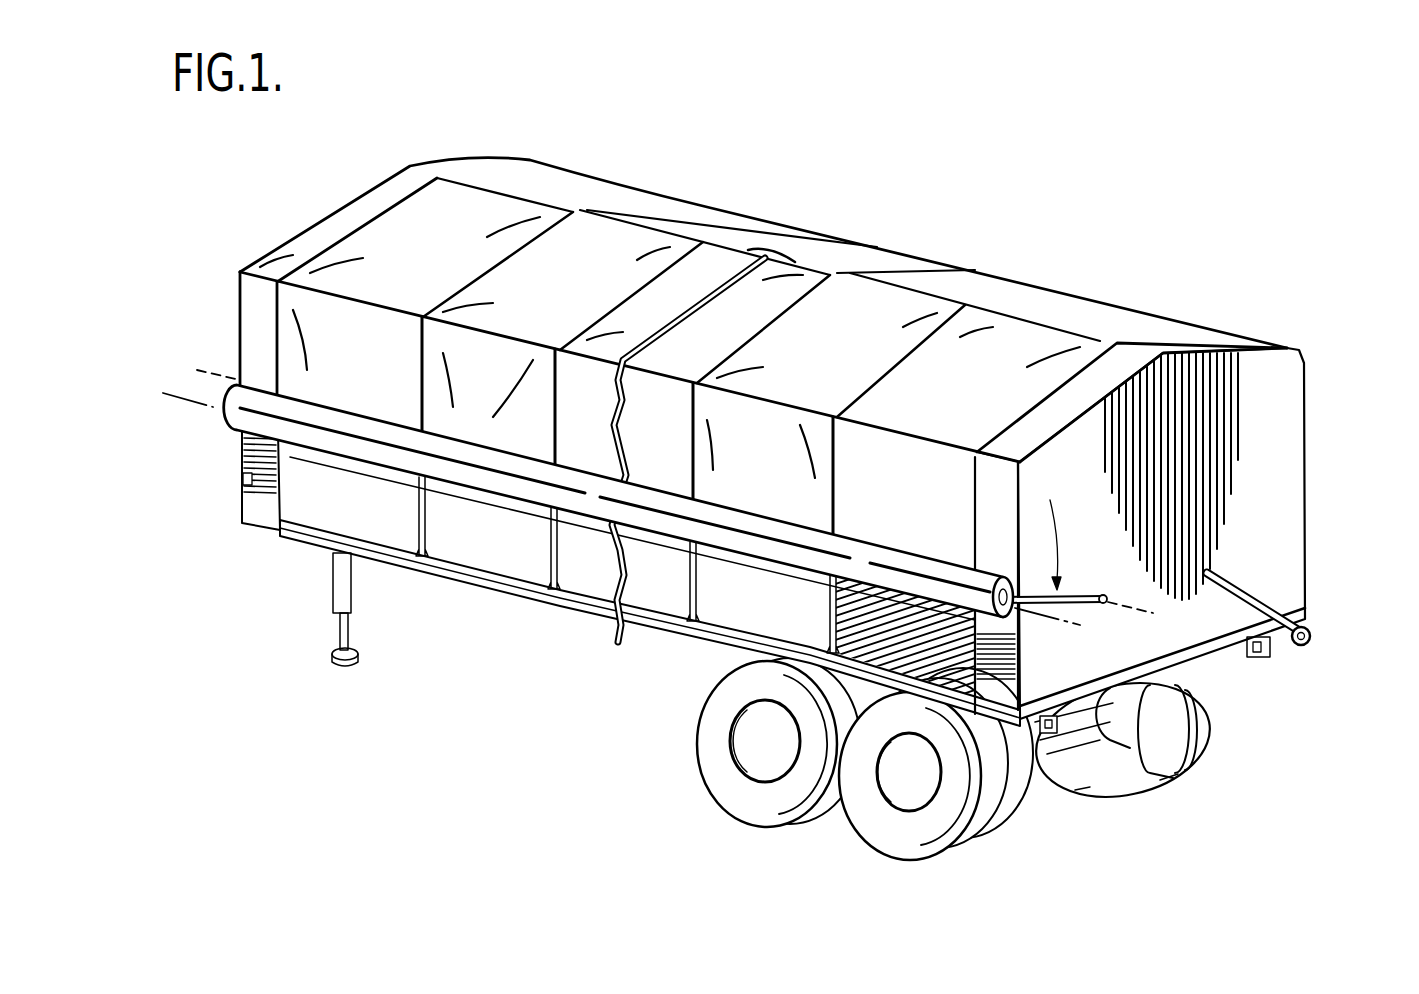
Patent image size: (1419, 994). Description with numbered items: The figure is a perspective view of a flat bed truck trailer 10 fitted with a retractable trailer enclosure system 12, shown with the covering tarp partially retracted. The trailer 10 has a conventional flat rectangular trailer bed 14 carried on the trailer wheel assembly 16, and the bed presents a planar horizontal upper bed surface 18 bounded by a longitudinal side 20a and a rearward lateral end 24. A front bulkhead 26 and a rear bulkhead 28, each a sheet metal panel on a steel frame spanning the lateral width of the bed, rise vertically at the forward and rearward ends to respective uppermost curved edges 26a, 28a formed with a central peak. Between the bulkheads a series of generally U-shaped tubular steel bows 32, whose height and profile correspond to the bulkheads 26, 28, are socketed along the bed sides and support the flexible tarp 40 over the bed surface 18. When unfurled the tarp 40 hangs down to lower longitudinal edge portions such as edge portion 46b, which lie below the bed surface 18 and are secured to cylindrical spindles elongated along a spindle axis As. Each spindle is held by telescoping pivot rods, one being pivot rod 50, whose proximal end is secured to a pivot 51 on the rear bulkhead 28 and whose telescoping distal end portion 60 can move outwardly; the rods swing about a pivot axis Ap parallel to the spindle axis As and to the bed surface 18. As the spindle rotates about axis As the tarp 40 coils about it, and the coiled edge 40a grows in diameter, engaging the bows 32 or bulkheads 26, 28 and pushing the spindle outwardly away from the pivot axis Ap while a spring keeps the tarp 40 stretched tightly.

The flat bed truck trailer 10 is at (518, 616).
The retractable trailer enclosure system 12 is at (1062, 524).
The trailer bed 14 is at (806, 627).
The trailer wheel assembly 16 is at (900, 843).
The upper bed surface 18 is at (907, 630).
The longitudinal side 20a is at (570, 610).
The rearward lateral end 24 is at (1213, 683).
The front bulkhead 26 is at (243, 507).
The uppermost curved edge 26a is at (320, 225).
The rear bulkhead 28 is at (1287, 430).
The uppermost curved edge 28a is at (1187, 343).
The tubular steel bows 32 is at (408, 535).
The tarp 40 is at (593, 289).
The coiled edge 40a is at (363, 427).
The longitudinal edge portion 46b is at (1313, 640).
The pivot rod 50 is at (1077, 587).
The pivot 51 is at (1110, 597).
The distal end portion 60 is at (1000, 578).
The pivot axis Ap is at (672, 483).
The spindle axis As is at (618, 517).